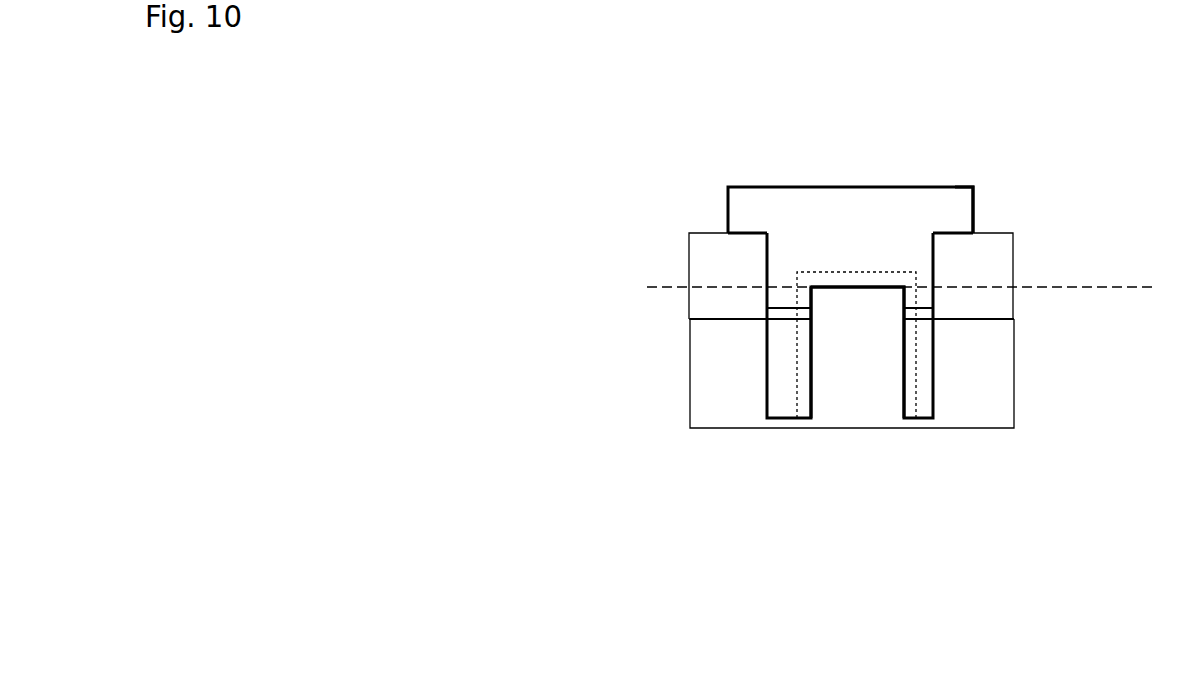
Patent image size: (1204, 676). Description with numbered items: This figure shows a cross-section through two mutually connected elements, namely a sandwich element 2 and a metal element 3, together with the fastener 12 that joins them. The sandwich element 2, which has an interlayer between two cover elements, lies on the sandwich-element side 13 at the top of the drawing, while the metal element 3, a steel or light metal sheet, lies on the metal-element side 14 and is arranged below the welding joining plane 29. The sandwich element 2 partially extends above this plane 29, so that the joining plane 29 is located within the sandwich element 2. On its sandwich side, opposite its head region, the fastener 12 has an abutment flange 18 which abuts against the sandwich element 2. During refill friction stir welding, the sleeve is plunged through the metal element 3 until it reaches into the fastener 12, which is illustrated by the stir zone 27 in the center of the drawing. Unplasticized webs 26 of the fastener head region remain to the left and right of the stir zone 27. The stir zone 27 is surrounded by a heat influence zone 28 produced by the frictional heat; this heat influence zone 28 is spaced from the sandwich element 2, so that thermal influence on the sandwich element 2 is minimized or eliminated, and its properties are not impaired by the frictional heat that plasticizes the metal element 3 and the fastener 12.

The sandwich element 2 is at (702, 255).
The metal element 3 is at (718, 410).
The fastener 12 is at (833, 218).
The sandwich-element side 13 is at (1096, 195).
The metal-element side 14 is at (1104, 488).
The abutment flange 18 is at (958, 195).
The unplasticized webs 26 is at (775, 312).
The stir zone 27 is at (857, 352).
The heat influence zone 28 is at (856, 245).
The welding joining plane 29 is at (919, 293).